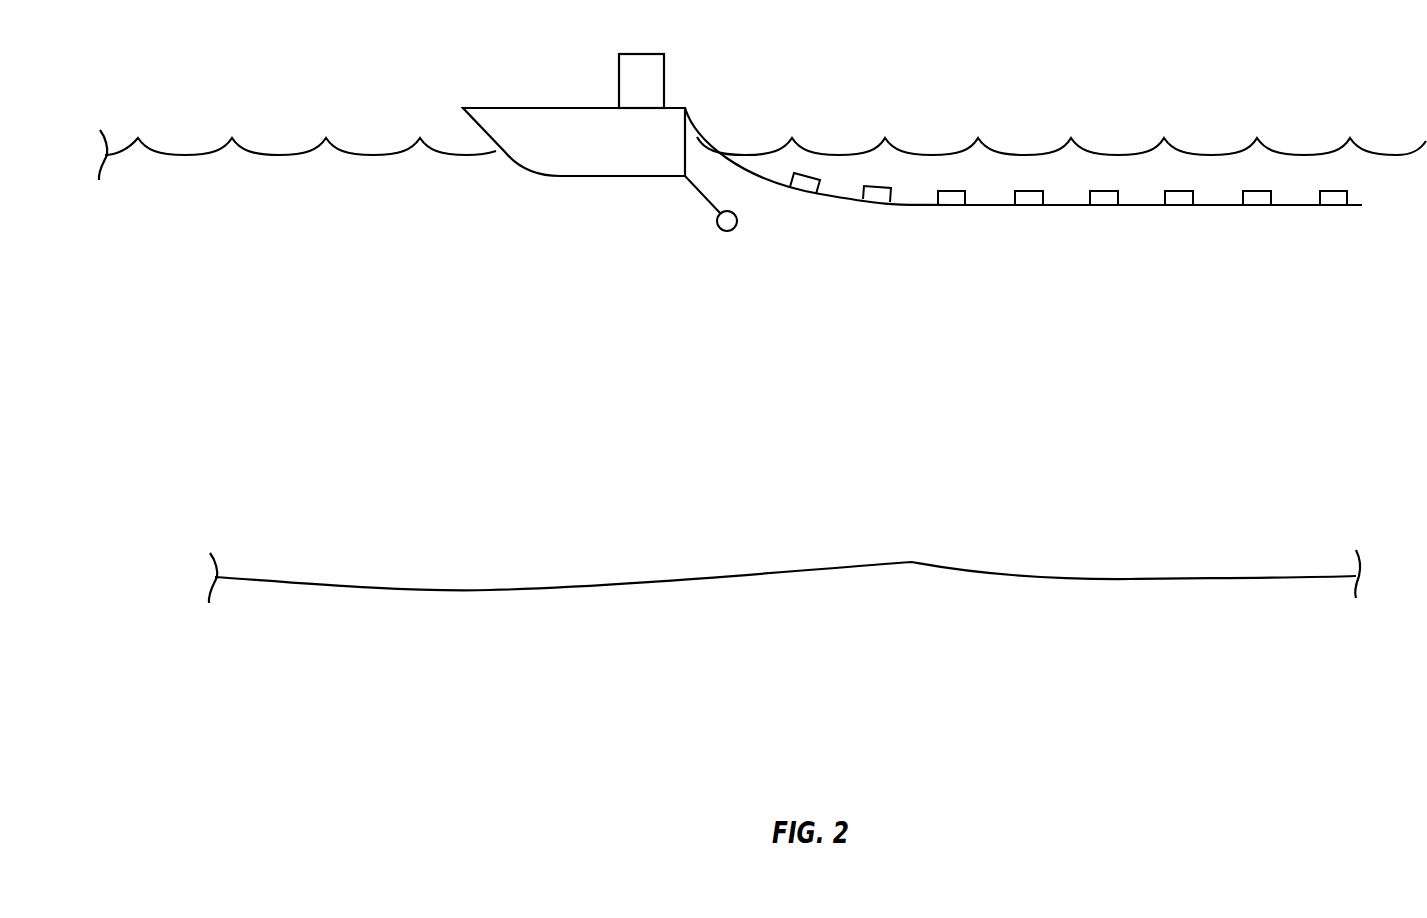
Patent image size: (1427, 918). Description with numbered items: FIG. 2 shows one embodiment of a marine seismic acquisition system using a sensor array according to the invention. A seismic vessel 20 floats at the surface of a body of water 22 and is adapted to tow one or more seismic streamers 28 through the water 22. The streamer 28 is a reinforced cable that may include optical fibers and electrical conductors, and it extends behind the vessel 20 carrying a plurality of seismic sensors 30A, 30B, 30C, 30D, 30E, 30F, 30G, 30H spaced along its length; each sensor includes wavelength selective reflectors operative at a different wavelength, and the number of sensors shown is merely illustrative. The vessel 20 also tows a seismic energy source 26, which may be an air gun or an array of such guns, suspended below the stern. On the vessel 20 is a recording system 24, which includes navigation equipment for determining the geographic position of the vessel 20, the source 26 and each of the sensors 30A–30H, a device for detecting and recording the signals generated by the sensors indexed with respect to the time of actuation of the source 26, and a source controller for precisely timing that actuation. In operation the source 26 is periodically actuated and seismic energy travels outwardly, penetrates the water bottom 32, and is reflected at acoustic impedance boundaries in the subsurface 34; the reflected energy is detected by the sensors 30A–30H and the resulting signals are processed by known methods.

The seismic vessel 20 is at (557, 178).
The body of water 22 is at (403, 142).
The recording system 24 is at (658, 54).
The seismic energy source 26 is at (724, 232).
The seismic streamer 28 is at (823, 194).
The seismic sensor 30A is at (808, 194).
The seismic sensor 30B is at (876, 203).
The seismic sensor 30C is at (952, 206).
The seismic sensor 30D is at (1030, 206).
The seismic sensor 30E is at (1108, 206).
The seismic sensor 30F is at (1183, 206).
The seismic sensor 30G is at (1258, 206).
The seismic sensor 30H is at (1334, 206).
The water bottom 32 is at (917, 562).
The subsurface 34 is at (736, 692).